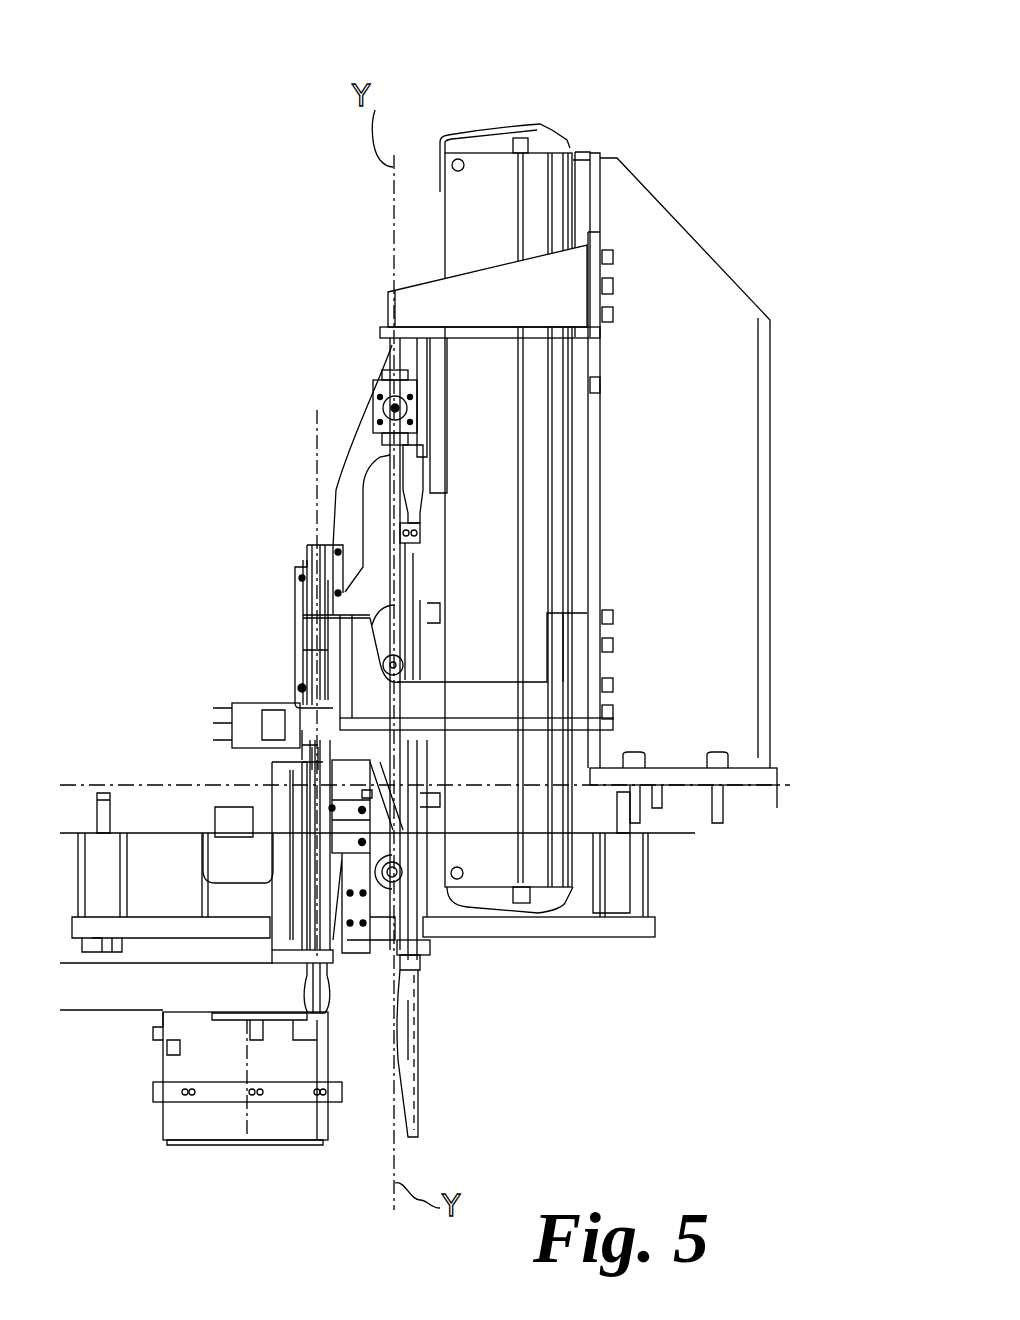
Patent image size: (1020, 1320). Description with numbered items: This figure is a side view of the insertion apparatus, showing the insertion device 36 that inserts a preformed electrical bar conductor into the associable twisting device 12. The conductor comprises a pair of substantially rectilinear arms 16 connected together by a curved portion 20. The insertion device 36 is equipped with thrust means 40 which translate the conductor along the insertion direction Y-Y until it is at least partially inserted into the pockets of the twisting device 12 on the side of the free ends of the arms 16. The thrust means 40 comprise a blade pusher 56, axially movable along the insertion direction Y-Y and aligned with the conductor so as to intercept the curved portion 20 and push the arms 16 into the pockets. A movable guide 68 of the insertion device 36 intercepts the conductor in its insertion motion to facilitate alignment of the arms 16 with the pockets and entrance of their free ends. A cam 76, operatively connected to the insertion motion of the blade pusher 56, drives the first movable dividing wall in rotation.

The insertion device 36 is at (545, 108).
The thrust means 40 is at (356, 396).
The blade pusher 56 is at (297, 570).
The movable guide 68 is at (300, 887).
The curved portion 20 is at (307, 978).
The arms 16 is at (353, 880).
The twisting device 12 is at (157, 1125).
The cam 76 is at (420, 1072).